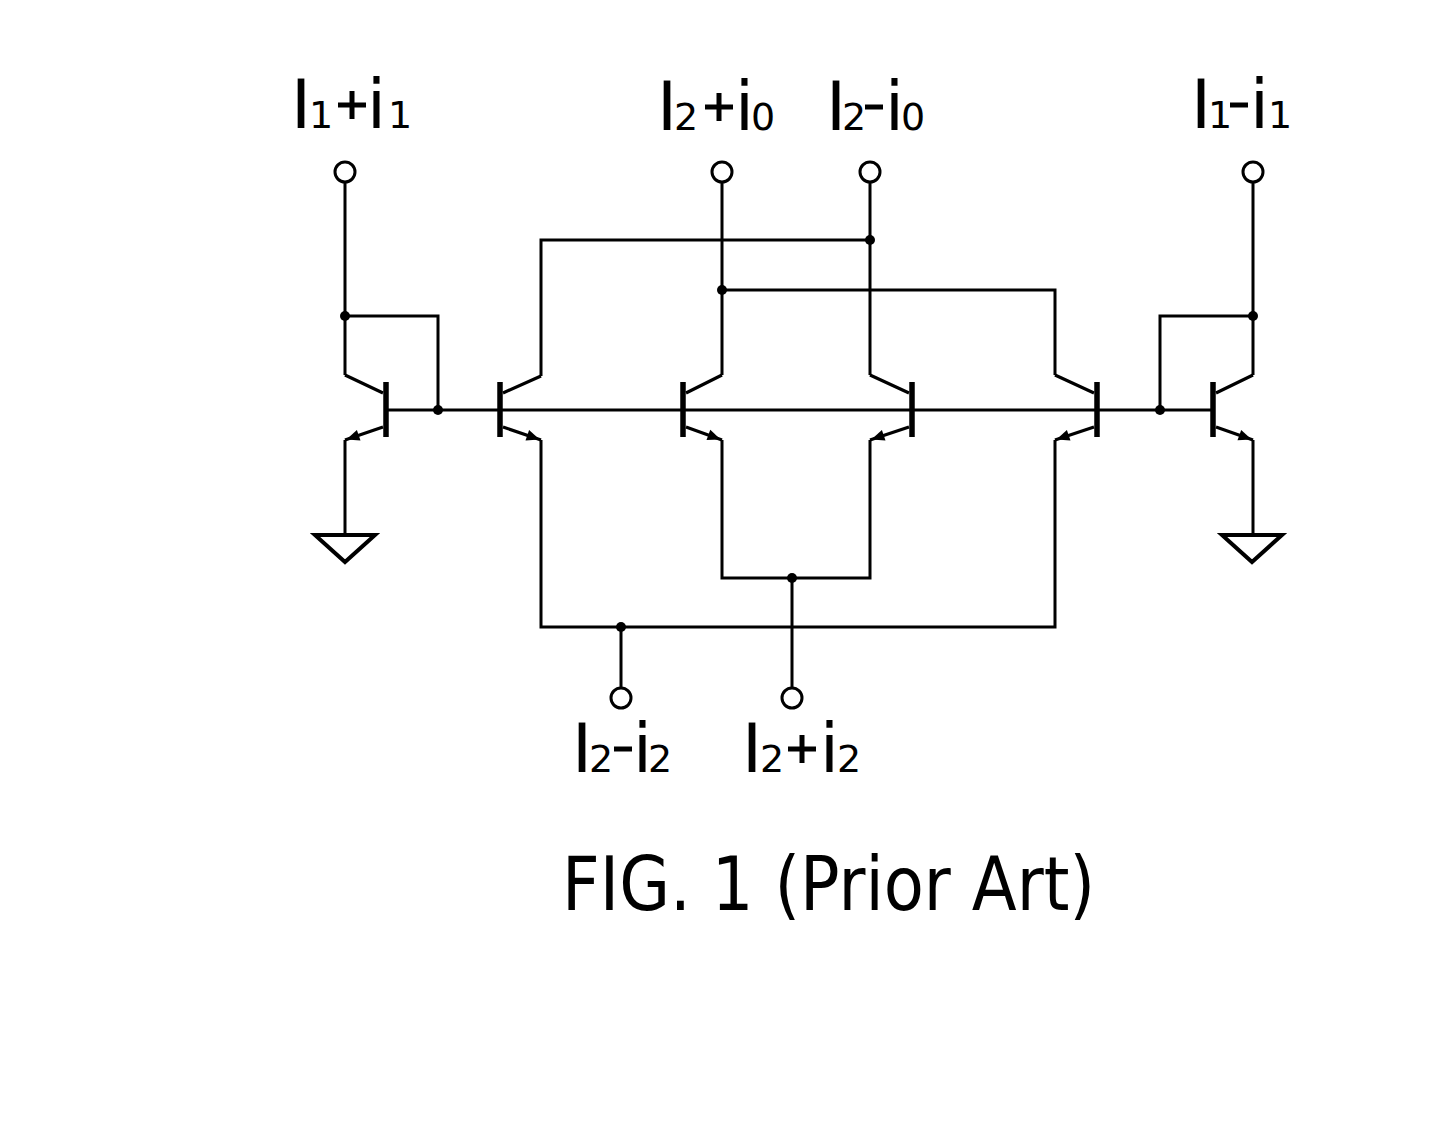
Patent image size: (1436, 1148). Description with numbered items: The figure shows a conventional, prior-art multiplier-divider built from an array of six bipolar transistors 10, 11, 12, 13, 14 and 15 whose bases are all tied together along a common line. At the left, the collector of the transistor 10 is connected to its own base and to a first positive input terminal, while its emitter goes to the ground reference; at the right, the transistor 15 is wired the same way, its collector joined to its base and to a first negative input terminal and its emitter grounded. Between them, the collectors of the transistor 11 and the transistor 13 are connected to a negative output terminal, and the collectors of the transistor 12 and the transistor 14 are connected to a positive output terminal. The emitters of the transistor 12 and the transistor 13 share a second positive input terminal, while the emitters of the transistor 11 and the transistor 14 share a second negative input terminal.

The transistor 10 is at (345, 412).
The transistor 11 is at (507, 463).
The transistor 12 is at (688, 462).
The transistor 13 is at (913, 450).
The transistor 14 is at (1105, 447).
The transistor 15 is at (1255, 413).